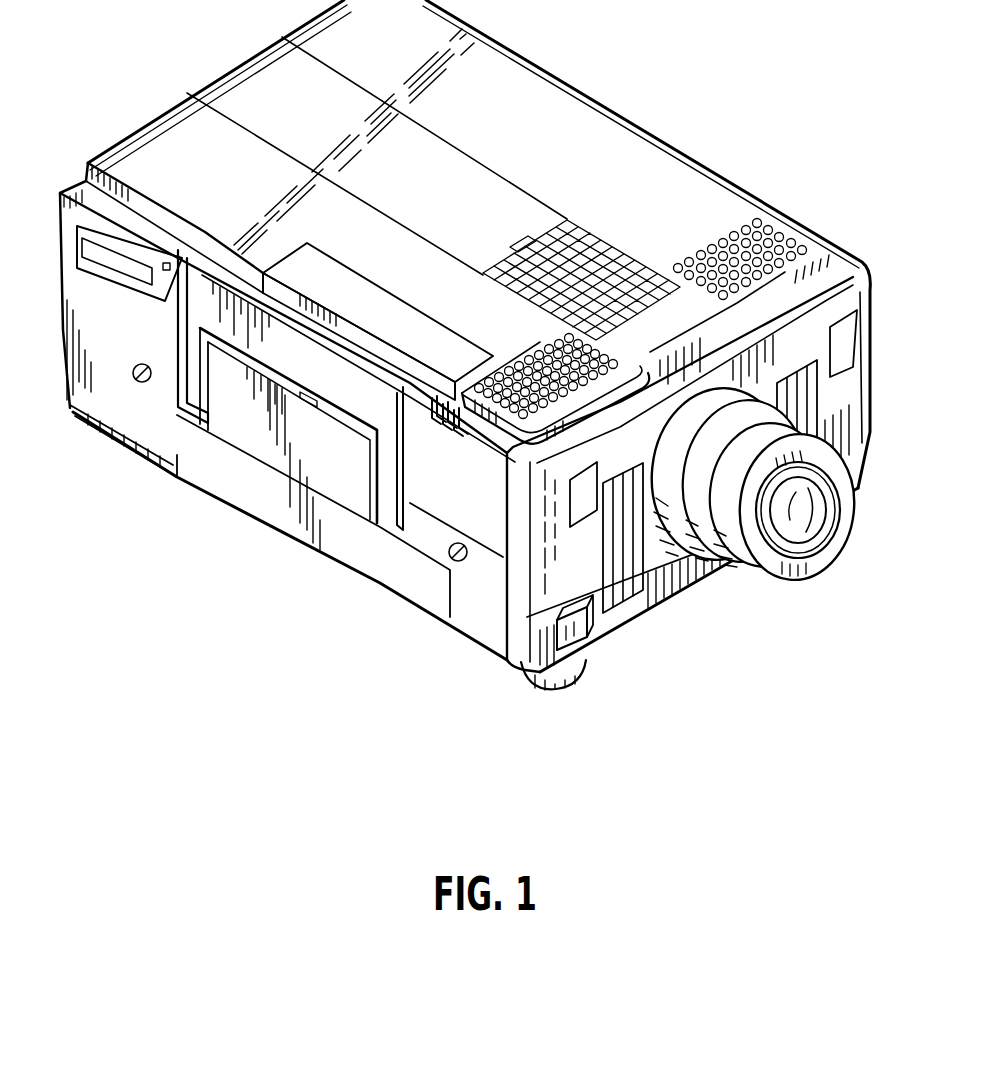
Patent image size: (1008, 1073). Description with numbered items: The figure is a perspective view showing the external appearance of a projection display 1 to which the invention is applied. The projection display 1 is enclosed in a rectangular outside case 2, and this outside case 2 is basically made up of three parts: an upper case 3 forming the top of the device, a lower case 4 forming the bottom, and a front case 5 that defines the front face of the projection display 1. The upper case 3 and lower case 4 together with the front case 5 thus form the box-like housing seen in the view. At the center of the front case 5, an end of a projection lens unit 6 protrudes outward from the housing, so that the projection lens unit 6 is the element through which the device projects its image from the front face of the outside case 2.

The projection display 1 is at (499, 412).
The outside case 2 is at (513, 620).
The upper case 3 is at (463, 517).
The lower case 4 is at (493, 627).
The front case 5 is at (622, 612).
The projection lens unit 6 is at (766, 445).